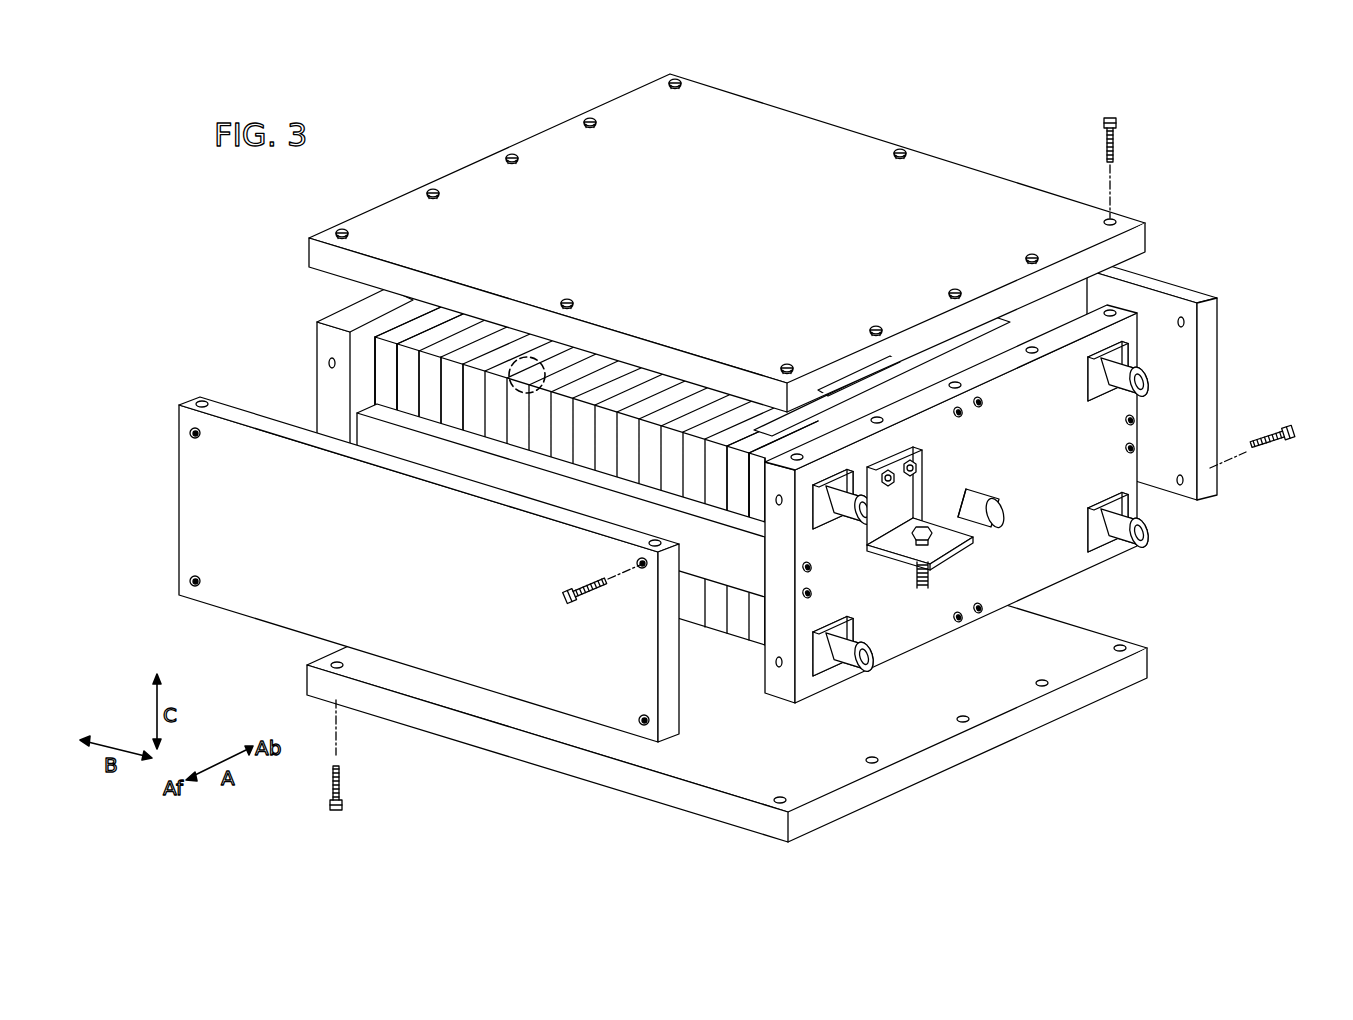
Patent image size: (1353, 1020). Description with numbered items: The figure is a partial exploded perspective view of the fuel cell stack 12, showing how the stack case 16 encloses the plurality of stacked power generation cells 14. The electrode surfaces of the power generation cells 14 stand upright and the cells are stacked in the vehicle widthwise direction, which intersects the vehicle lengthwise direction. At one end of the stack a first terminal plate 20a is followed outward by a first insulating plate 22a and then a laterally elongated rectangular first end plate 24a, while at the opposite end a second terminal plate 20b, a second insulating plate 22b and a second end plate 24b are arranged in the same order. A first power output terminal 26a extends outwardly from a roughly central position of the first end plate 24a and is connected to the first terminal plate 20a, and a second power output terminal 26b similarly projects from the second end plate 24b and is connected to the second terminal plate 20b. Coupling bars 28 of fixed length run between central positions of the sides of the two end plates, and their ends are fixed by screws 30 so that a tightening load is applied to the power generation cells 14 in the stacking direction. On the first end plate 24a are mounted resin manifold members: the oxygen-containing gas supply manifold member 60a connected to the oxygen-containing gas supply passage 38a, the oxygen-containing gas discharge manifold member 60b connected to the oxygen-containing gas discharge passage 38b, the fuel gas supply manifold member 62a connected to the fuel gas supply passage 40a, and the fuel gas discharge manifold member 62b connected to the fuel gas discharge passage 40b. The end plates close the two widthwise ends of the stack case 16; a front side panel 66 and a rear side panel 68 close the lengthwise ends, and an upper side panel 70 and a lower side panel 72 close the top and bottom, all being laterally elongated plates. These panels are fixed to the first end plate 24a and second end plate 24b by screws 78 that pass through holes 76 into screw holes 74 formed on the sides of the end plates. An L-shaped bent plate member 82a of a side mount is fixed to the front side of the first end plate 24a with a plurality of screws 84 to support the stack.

The fuel cell stack 12 is at (506, 113).
The power generation cells 14 is at (585, 376).
The stack case 16 is at (466, 149).
The first terminal plate 20a is at (741, 458).
The second terminal plate 20b is at (408, 405).
The first insulating plate 22a is at (757, 465).
The second insulating plate 22b is at (385, 398).
The first end plate 24a is at (1138, 360).
The second end plate 24b is at (323, 322).
The first power output terminal 26a is at (984, 504).
The second power output terminal 26b is at (546, 348).
The coupling bars 28 is at (567, 500).
The screws 30 is at (961, 417).
The oxygen-containing gas supply passage 38a is at (1191, 376).
The oxygen-containing gas discharge passage 38b is at (870, 675).
The fuel gas supply passage 40a is at (1124, 559).
The fuel gas discharge passage 40b is at (838, 429).
The oxygen-containing gas supply manifold member 60a is at (1141, 383).
The oxygen-containing gas discharge manifold member 60b is at (848, 652).
The fuel gas supply manifold member 62a is at (1118, 535).
The fuel gas discharge manifold member 62b is at (833, 488).
The front side panel 66 is at (249, 445).
The rear side panel 68 is at (1205, 355).
The upper side panel 70 is at (976, 190).
The lower side panel 72 is at (1072, 700).
The screw holes 74 is at (1112, 312).
The holes 76 is at (1114, 222).
The screws 78 is at (1117, 140).
The plate member 82a is at (920, 531).
The screws 84 is at (917, 470).